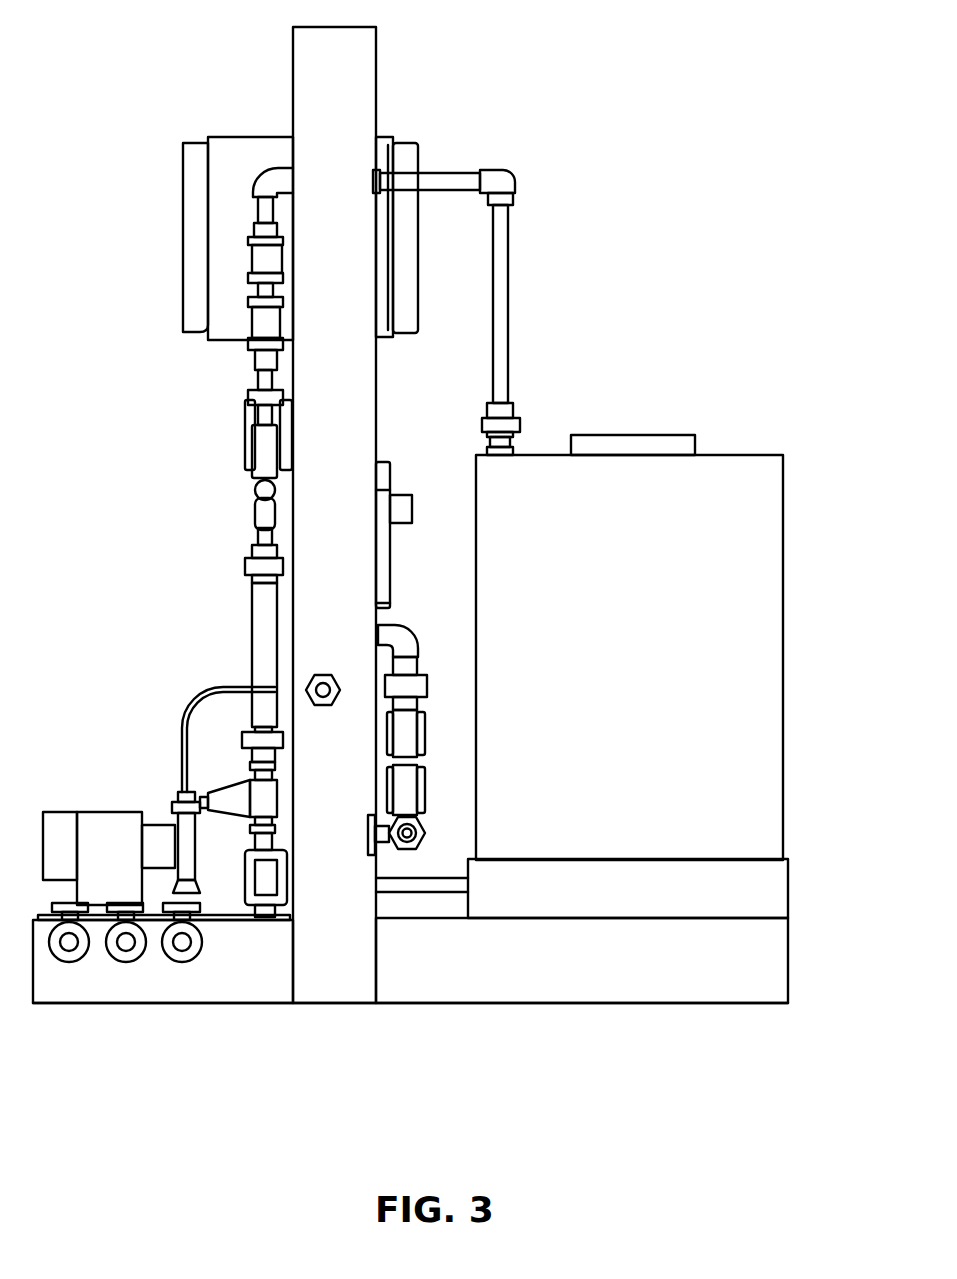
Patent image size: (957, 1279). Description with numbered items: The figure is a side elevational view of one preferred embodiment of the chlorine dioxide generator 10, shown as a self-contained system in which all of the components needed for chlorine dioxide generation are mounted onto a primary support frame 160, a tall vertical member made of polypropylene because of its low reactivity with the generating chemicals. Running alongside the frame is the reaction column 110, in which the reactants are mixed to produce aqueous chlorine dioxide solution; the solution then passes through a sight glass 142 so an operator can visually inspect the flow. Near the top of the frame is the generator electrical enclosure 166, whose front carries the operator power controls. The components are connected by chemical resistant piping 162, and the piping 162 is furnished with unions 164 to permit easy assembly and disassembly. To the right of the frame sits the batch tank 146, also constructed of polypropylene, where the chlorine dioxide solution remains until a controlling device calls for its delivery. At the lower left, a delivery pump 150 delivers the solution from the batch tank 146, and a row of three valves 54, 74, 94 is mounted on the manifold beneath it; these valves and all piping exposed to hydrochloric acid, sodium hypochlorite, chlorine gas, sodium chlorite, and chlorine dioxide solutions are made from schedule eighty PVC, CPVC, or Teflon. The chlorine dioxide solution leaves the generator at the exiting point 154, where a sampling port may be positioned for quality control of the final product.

The chlorine dioxide generator 10 is at (744, 86).
The valve 54 is at (69, 957).
The valve 74 is at (126, 957).
The valve 94 is at (182, 957).
The reaction column 110 is at (234, 438).
The sight glass 142 is at (268, 260).
The batch tank 146 is at (663, 693).
The delivery pump 150 is at (105, 820).
The exiting point 154 is at (405, 845).
The primary support frame 160 is at (368, 73).
The chemical resistant piping 162 is at (500, 333).
The union 164 is at (502, 180).
The generator electrical enclosure 166 is at (223, 208).